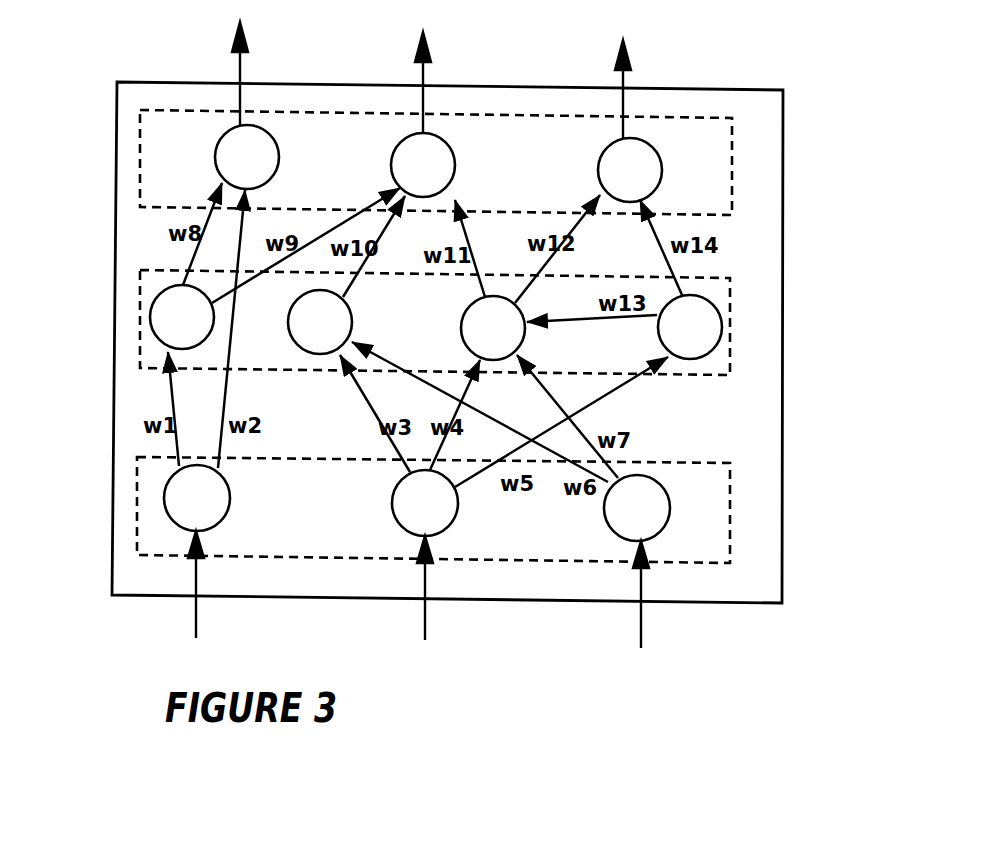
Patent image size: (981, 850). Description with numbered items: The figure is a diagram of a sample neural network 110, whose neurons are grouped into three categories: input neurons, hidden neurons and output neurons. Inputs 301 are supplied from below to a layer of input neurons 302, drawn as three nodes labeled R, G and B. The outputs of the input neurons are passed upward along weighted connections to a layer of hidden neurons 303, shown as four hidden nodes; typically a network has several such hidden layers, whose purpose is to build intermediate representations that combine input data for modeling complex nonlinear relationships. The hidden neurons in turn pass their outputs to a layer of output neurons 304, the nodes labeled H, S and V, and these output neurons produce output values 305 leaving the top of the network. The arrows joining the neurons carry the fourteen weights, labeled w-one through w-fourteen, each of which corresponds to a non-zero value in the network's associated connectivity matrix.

The neural network 110 is at (117, 140).
The inputs 301 is at (195, 572).
The layer of input neurons 302 is at (728, 515).
The layer of hidden neurons 303 is at (730, 327).
The layer of output neurons 304 is at (732, 170).
The output values 305 is at (238, 67).